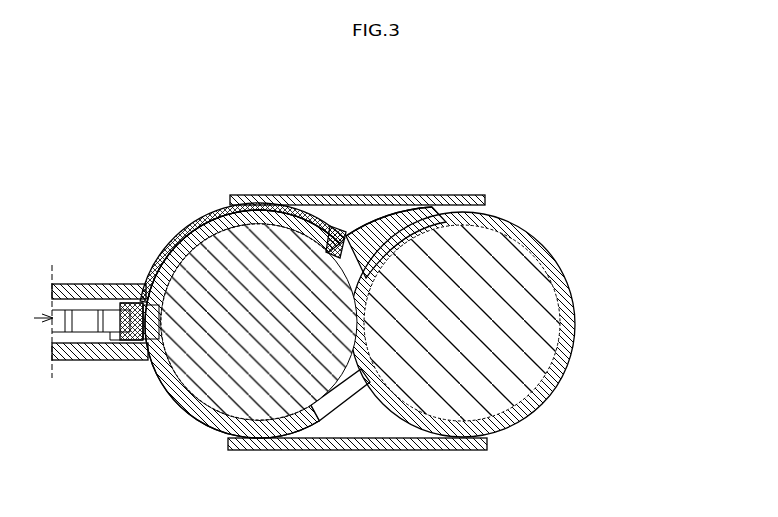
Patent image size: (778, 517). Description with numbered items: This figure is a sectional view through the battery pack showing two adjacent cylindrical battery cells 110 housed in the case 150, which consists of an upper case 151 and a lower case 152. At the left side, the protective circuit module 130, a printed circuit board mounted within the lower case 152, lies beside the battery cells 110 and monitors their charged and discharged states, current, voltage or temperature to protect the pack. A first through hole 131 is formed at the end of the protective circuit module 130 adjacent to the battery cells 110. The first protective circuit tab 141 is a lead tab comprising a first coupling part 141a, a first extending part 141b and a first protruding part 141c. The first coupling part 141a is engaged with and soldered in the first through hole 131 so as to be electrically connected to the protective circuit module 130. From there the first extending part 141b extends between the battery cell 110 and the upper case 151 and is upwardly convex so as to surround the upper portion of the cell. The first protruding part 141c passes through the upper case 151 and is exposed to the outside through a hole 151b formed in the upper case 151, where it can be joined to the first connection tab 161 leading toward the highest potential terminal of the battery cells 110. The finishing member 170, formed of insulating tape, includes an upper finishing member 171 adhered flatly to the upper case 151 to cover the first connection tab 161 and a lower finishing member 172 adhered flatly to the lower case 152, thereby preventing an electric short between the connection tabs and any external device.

The battery cell 110 is at (216, 414).
The protective circuit module 130 is at (80, 356).
The first through hole 131 is at (139, 342).
The first protective circuit tab 141 is at (230, 209).
The first coupling part 141a is at (139, 239).
The first extending part 141b is at (212, 212).
The first protruding part 141c is at (340, 227).
The case 150 is at (537, 324).
The upper case 151 is at (557, 264).
The hole 151b is at (357, 228).
The lower case 152 is at (648, 263).
The first connection tab 161 is at (350, 226).
The finishing member 170 is at (372, 265).
The upper finishing member 171 is at (478, 197).
The lower finishing member 172 is at (380, 440).